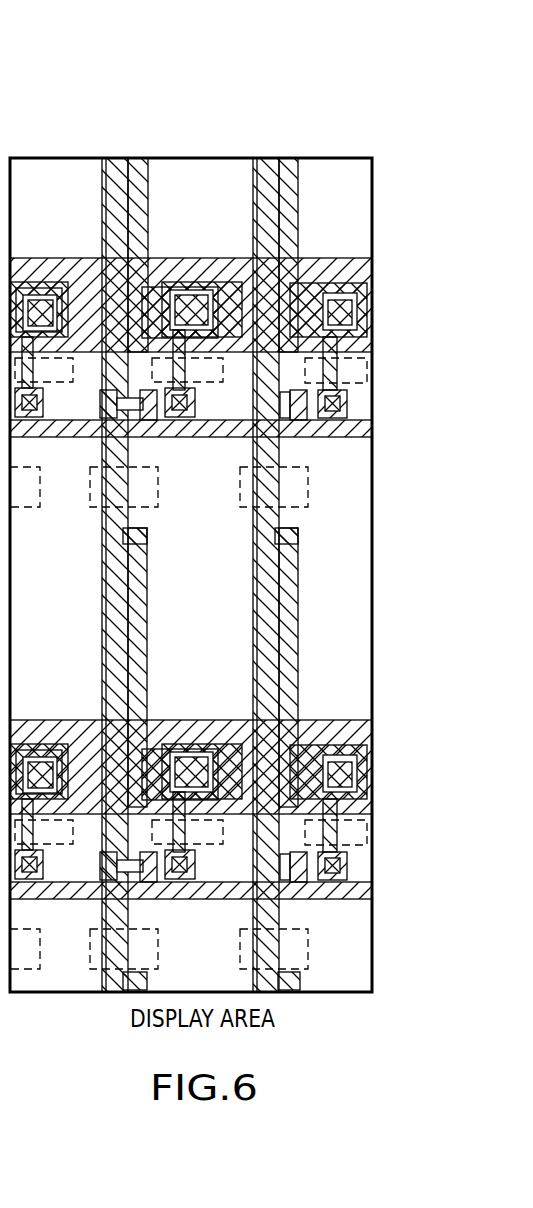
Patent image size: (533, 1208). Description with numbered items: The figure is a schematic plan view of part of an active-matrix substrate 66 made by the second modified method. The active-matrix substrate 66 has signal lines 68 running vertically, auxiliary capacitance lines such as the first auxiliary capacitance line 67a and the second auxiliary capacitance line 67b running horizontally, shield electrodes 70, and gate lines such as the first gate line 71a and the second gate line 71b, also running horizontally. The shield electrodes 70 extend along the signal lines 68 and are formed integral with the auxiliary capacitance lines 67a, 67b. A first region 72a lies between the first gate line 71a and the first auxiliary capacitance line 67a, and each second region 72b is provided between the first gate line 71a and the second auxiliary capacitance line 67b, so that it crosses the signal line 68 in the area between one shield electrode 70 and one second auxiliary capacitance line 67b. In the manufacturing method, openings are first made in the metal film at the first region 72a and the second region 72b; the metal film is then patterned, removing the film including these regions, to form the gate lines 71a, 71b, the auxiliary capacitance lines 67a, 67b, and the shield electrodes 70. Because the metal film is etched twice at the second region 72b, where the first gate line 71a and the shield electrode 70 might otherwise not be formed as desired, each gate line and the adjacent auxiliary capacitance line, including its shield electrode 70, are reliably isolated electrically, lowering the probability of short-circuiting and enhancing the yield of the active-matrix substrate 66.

The active-matrix substrate 66 is at (192, 72).
The first auxiliary capacitance line 67a is at (362, 277).
The second auxiliary capacitance line 67b is at (362, 740).
The signal line 68 is at (137, 158).
The shield electrode 70 is at (150, 201).
The first gate line 71a is at (360, 432).
The second gate line 71b is at (360, 893).
The first region 72a is at (360, 369).
The second region 72b is at (155, 507).